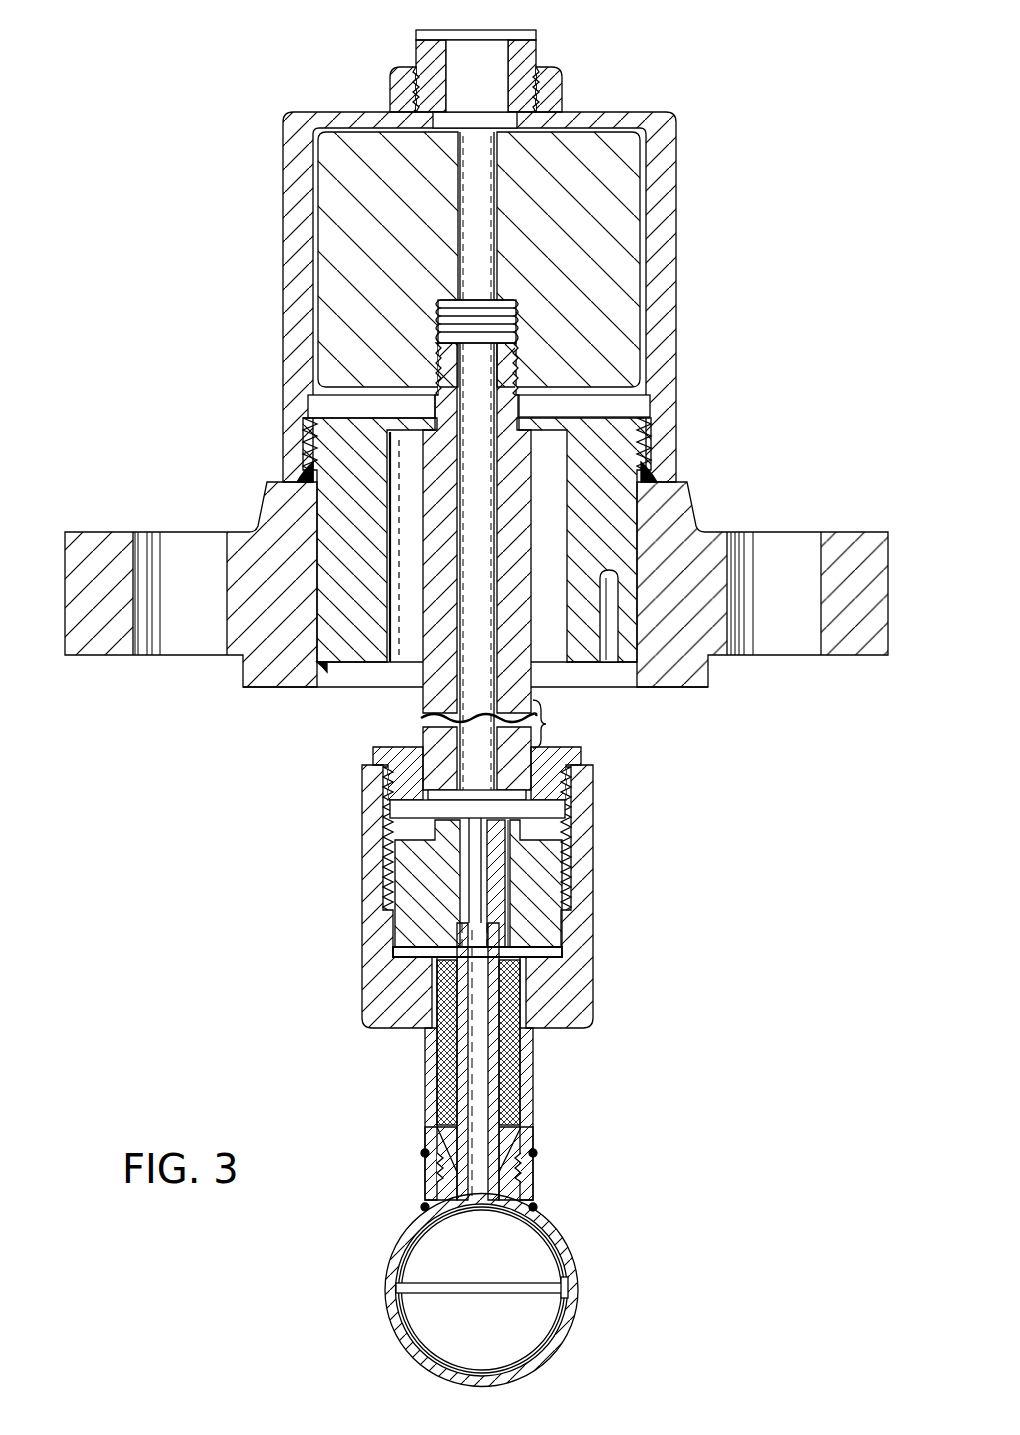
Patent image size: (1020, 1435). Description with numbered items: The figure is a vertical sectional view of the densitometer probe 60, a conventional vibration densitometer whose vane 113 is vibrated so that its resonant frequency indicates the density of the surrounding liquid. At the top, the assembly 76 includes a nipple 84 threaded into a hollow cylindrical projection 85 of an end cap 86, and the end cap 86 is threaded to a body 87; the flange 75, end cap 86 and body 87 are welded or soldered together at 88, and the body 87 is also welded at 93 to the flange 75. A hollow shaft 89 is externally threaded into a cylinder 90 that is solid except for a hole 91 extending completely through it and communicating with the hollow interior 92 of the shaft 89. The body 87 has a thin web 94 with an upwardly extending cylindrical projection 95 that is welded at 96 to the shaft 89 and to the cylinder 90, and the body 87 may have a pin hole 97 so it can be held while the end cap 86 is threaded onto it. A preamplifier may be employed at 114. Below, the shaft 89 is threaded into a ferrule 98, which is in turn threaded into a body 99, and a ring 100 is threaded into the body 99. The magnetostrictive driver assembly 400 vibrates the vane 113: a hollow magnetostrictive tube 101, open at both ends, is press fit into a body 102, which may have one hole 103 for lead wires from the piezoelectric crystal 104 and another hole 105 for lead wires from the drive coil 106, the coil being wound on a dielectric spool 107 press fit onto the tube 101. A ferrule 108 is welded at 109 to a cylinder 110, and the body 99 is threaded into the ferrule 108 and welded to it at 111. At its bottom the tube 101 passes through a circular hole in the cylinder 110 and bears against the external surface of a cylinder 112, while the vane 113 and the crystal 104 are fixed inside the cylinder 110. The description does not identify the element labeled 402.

The densitometer probe 60 is at (547, 718).
The flange 75 is at (839, 533).
The assembly 76 is at (476, 410).
The nipple 84 is at (538, 33).
The hollow cylindrical projection 85 is at (563, 84).
The end cap 86 is at (676, 262).
The body 87 is at (338, 414).
The weld or solder joint 88 is at (298, 474).
The hollow shaft 89 is at (423, 727).
The cylinder 90 is at (630, 370).
The hole 91 is at (492, 172).
The hollow interior 92 is at (498, 470).
The weld 93 is at (326, 670).
The thin web 94 is at (396, 432).
The cylindrical projection 95 is at (418, 408).
The weld 96 is at (533, 412).
The pin hole 97 is at (609, 662).
The ferrule 98 is at (581, 751).
The body 99 is at (594, 822).
The ring 100 is at (438, 820).
The magnetostrictive tube 101 is at (460, 920).
The body 102 is at (468, 838).
The hole 103 is at (476, 856).
The piezoelectric crystal 104 is at (567, 1288).
The hole 105 is at (516, 870).
The drive coil 106 is at (451, 1030).
The dielectric spool 107 is at (440, 962).
The ferrule 108 is at (421, 1155).
The weld 109 is at (424, 1207).
The cylinder 110 is at (390, 1300).
The weld 111 is at (535, 1153).
The cylinder 112 is at (466, 1352).
The vane 113 is at (490, 1257).
The preamplifier 114 is at (490, 81).
The magnetostrictive driver assembly 400 is at (537, 1067).
The outlet tube 402 is at (562, 1049).